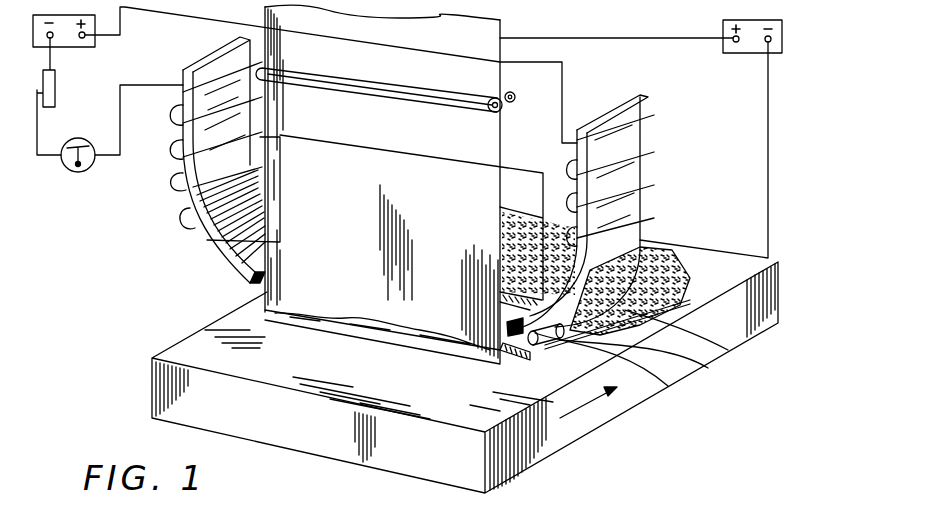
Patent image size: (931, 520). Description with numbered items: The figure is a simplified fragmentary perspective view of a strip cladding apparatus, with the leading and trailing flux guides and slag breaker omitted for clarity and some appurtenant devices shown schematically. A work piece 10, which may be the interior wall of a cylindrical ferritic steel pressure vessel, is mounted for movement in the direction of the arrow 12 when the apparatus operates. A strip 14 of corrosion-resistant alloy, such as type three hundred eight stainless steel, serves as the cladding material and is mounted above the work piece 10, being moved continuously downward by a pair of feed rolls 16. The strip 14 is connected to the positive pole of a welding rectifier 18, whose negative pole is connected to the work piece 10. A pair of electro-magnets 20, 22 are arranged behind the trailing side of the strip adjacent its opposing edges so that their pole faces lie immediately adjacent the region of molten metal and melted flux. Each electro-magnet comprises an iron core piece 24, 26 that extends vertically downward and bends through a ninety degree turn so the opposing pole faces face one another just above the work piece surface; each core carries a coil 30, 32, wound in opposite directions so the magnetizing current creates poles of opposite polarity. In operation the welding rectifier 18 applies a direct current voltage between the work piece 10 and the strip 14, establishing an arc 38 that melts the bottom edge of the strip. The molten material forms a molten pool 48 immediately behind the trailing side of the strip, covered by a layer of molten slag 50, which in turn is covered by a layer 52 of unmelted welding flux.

The work piece 10 is at (188, 352).
The arrow 12 is at (587, 405).
The strip 14 is at (507, 17).
The feed rolls 16 is at (500, 113).
The welding rectifier 18 is at (783, 38).
The electro-magnet 20 is at (305, 148).
The electro-magnet 22 is at (616, 222).
The iron core piece 24 is at (203, 250).
The iron core piece 26 is at (640, 240).
The coil 30 is at (178, 158).
The coil 32 is at (655, 135).
The arc 38 is at (505, 354).
The molten pool 48 is at (662, 383).
The layer of molten slag 50 is at (703, 364).
The layer of unmelted welding flux 52 is at (722, 347).